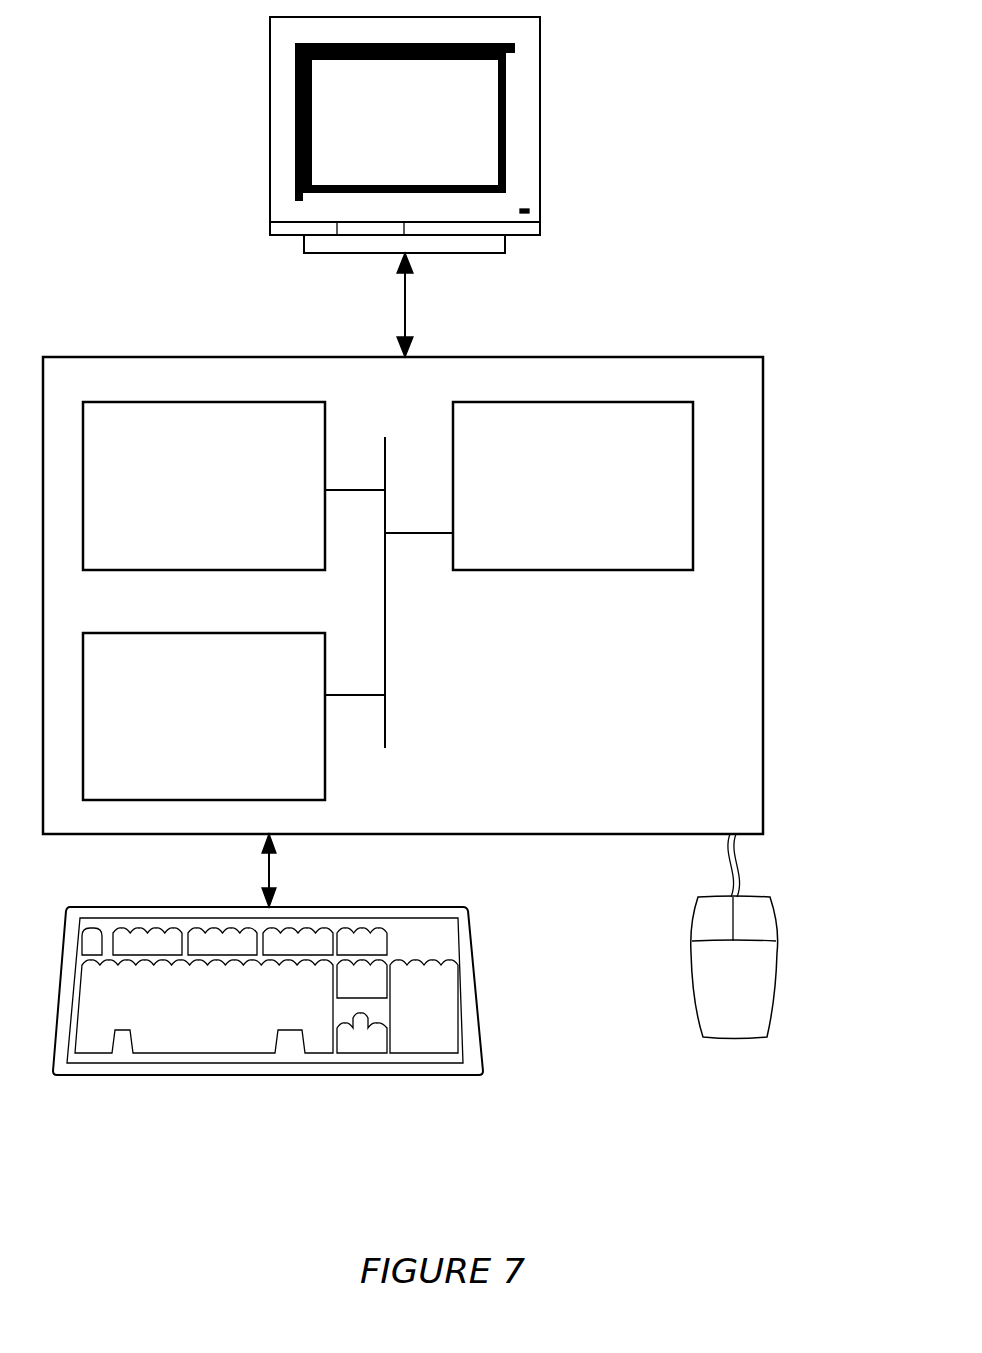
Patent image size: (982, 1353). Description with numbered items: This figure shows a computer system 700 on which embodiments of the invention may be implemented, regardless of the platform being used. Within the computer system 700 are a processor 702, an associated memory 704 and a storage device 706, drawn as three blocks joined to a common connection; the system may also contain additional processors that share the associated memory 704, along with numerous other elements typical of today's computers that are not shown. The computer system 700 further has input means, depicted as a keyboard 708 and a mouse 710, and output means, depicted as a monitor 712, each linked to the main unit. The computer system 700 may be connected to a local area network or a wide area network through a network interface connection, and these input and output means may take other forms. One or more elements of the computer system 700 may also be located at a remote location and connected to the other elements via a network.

The computer system 700 is at (791, 649).
The processor 702 is at (182, 495).
The associated memory 704 is at (569, 496).
The storage device 706 is at (180, 728).
The keyboard 708 is at (174, 1021).
The mouse 710 is at (711, 986).
The monitor 712 is at (372, 138).